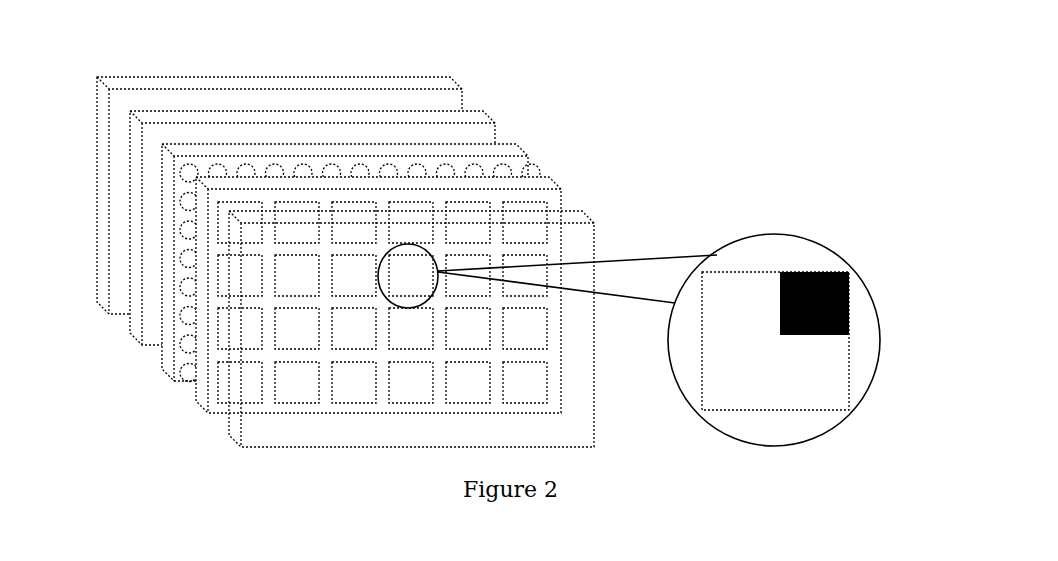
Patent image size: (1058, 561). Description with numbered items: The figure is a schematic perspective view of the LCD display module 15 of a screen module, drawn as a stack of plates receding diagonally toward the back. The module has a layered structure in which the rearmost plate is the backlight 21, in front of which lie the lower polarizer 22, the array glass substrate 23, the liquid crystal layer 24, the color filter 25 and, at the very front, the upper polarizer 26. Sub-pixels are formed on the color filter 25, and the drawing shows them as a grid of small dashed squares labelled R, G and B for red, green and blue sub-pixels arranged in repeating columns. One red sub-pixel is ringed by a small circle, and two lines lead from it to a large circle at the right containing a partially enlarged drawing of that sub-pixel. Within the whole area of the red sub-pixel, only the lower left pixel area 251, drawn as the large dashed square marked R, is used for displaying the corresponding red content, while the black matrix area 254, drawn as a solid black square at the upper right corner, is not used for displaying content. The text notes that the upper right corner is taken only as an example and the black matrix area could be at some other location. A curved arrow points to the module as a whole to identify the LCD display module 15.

The LCD display module 15 is at (427, 51).
The backlight 21 is at (448, 100).
The lower polarizer 22 is at (482, 133).
The array glass substrate 23 is at (513, 168).
The liquid crystal layer 24 is at (187, 345).
The color filter 25 is at (563, 193).
The upper polarizer 26 is at (582, 233).
The lower left pixel area 251 is at (725, 397).
The black matrix area 254 is at (832, 272).